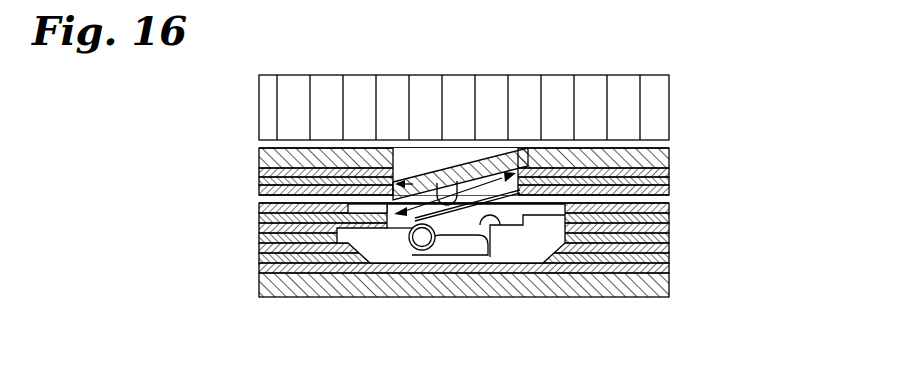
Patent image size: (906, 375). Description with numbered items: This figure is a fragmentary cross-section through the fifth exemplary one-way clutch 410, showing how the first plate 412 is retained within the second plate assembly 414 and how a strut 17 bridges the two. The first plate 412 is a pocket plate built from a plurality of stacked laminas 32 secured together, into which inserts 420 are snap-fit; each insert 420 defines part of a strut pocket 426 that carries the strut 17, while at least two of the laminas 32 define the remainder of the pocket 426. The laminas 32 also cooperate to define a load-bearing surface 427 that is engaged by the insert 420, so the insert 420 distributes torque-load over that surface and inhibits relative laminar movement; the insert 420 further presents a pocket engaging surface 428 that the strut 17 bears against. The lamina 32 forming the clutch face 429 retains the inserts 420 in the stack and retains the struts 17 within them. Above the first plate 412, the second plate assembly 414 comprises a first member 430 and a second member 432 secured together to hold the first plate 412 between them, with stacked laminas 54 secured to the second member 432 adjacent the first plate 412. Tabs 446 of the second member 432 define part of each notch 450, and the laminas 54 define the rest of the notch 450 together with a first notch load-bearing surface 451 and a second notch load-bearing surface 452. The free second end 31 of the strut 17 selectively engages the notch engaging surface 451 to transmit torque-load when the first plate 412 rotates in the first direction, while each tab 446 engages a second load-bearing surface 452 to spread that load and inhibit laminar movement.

The torque-load-transmitting strut 17 is at (468, 168).
The second free end of strut 31 is at (522, 188).
The lamina 32 is at (258, 208).
The stacked laminas of second plate assembly 54 is at (668, 172).
The fifth exemplary one-way clutch 410 is at (493, 279).
The first plate 412 is at (668, 255).
The second plate assembly 414 is at (465, 155).
The insert 420 is at (351, 262).
The strut pocket 426 is at (487, 258).
The load-bearing surface 427 is at (351, 232).
The pocket engaging surface 428 is at (442, 240).
The clutch face 429 is at (341, 193).
The first member 430 is at (635, 297).
The second member 432 is at (258, 155).
The tab 446 is at (442, 168).
The notch 450 is at (426, 178).
The first notch load-bearing surface 451 is at (500, 186).
The second notch load-bearing surface 452 is at (412, 186).